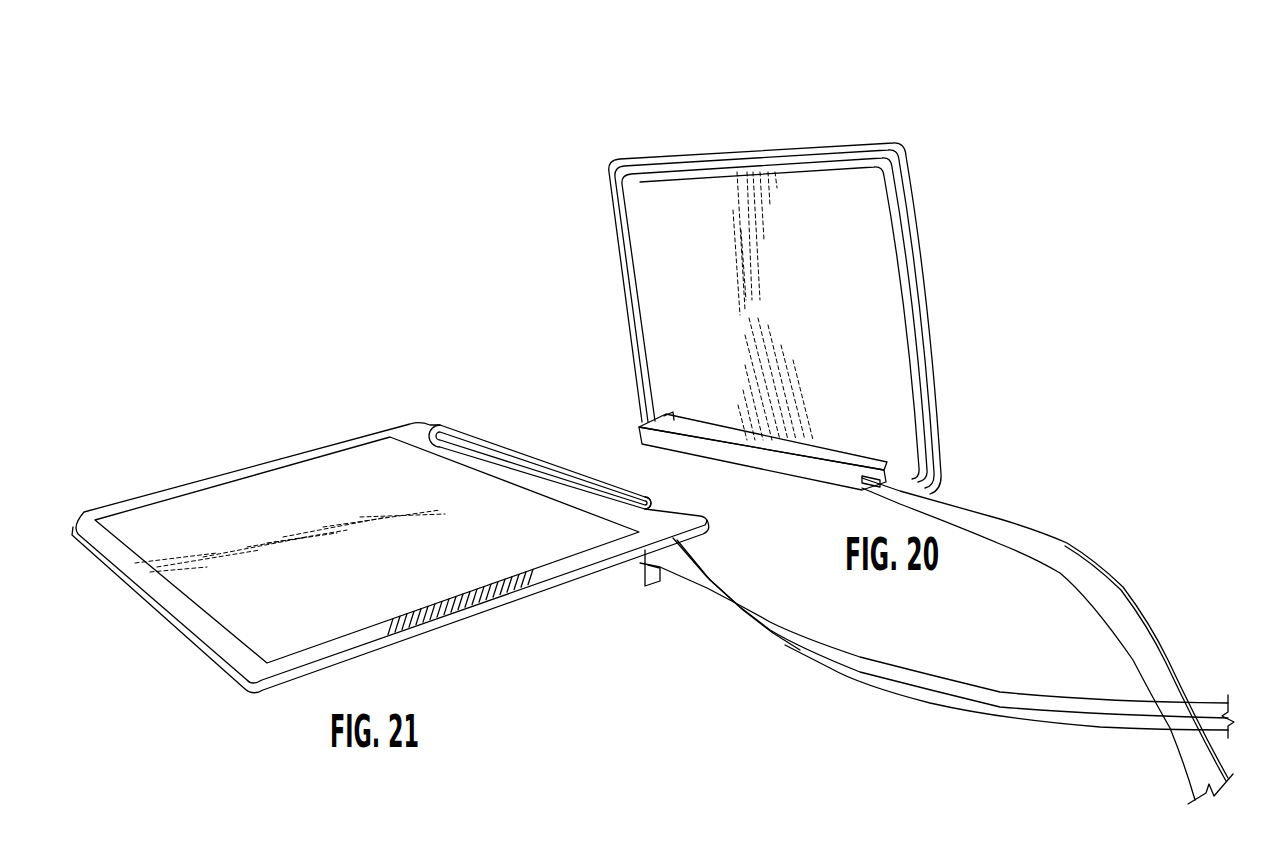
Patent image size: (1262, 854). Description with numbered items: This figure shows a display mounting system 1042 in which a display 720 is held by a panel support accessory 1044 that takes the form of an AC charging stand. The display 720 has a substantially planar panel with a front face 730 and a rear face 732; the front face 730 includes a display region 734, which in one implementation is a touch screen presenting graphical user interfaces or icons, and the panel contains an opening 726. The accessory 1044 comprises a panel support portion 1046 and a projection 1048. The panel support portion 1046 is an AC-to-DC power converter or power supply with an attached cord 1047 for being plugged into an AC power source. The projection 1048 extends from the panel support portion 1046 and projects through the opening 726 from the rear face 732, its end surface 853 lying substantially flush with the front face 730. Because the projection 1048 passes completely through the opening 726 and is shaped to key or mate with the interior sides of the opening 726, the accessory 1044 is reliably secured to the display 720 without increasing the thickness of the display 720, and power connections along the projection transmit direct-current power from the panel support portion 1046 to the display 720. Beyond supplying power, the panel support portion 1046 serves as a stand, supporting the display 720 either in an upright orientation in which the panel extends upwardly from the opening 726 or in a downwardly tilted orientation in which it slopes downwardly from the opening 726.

In FIG. 20, the display 720 is at (785, 302).
In FIG. 21, the display 720 is at (395, 528).
In FIG. 21, the opening 726 is at (648, 496).
In FIG. 20, the front face 730 is at (975, 230).
In FIG. 21, the front face 730 is at (286, 418).
In FIG. 20, the rear face 732 is at (606, 212).
In FIG. 21, the display region 734 is at (428, 582).
In FIG. 21, the end surface 853 is at (470, 430).
In FIG. 20, the display mounting system 1042 is at (872, 414).
In FIG. 21, the display mounting system 1042 is at (395, 467).
In FIG. 20, the panel support accessory 1044 is at (634, 413).
In FIG. 21, the panel support accessory 1044 is at (645, 586).
In FIG. 20, the panel support portion 1046 is at (803, 478).
In FIG. 20, the cord 1047 is at (872, 687).
In FIG. 21, the projection 1048 is at (537, 418).